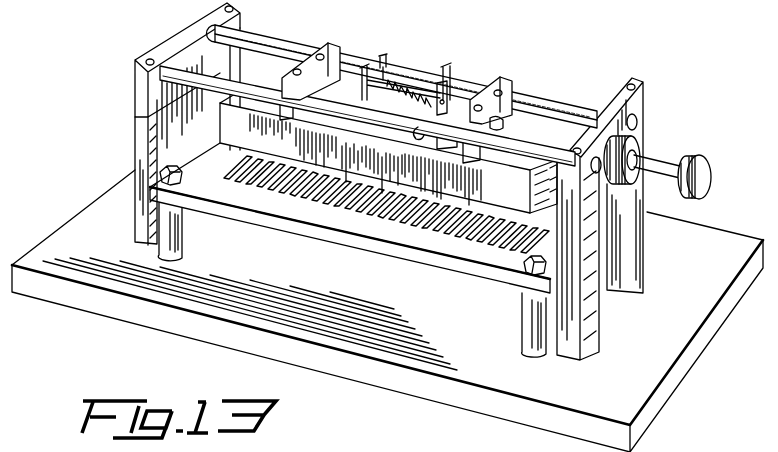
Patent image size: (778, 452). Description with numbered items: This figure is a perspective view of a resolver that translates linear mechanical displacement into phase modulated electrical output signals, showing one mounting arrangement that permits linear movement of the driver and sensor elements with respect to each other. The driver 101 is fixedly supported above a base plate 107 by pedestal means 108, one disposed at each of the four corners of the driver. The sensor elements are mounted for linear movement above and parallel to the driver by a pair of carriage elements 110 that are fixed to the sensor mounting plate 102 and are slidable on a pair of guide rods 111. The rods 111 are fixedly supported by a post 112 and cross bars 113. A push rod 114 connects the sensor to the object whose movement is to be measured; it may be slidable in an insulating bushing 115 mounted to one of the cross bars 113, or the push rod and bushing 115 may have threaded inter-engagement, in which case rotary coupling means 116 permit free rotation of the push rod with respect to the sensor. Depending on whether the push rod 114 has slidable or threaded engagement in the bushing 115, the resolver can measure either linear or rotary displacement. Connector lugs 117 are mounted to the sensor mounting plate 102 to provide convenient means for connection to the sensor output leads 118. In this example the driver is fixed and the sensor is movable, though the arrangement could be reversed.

The driver 101 is at (366, 242).
The sensor mounting plate 102 is at (245, 132).
The base plate 107 is at (192, 327).
The pedestal means 108 is at (182, 230).
The carriage elements 110 is at (313, 52).
The guide rods 111 is at (488, 175).
The post 112 is at (227, 60).
The cross bars 113 is at (140, 90).
The push rod 114 is at (690, 158).
The insulating bushing 115 is at (640, 149).
The rotary coupling means 116 is at (537, 105).
The connector lugs 117 is at (393, 67).
The sensor output leads 118 is at (423, 133).